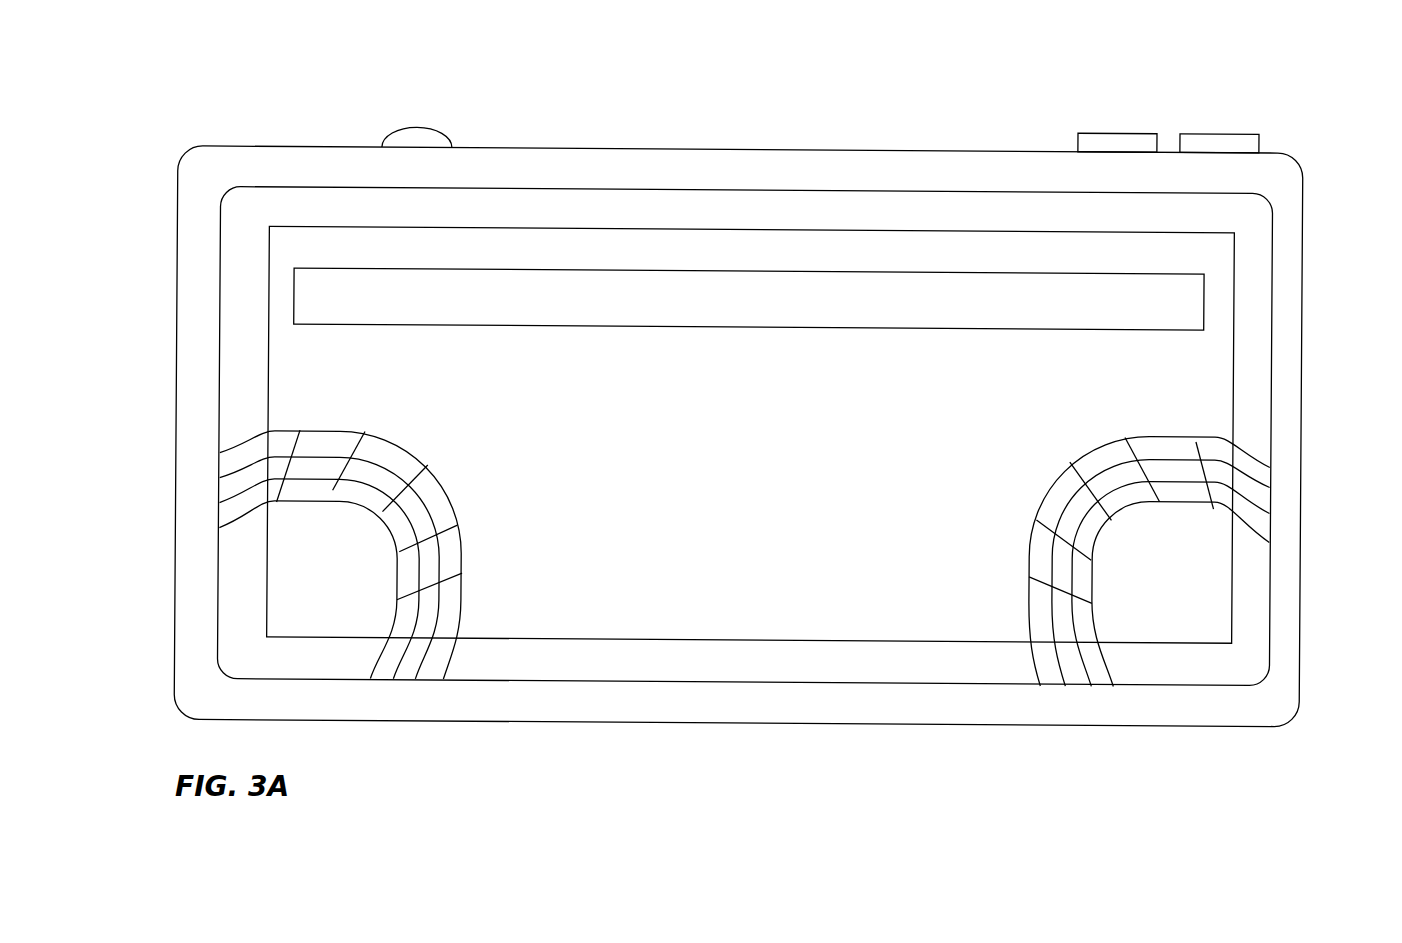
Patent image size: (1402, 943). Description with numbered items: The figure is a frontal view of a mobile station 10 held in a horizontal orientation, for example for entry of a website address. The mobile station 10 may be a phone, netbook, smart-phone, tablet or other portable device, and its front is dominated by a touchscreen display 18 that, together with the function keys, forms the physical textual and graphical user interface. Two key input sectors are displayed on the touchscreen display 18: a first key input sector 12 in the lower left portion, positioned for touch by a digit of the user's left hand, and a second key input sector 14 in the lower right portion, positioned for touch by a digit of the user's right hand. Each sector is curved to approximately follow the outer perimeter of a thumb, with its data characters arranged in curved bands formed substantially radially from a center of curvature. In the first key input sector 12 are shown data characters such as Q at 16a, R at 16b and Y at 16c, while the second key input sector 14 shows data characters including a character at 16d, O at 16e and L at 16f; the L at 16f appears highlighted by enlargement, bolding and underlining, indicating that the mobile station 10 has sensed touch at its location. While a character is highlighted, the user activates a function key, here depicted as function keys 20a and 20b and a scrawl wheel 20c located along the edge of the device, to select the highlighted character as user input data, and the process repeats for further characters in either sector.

The mobile station 10 is at (1302, 254).
The first key input sector 12 is at (283, 586).
The second key input sector 14 is at (1217, 546).
The data character Q 16a is at (313, 431).
The data character R 16b is at (447, 505).
The data character Y 16c is at (453, 597).
The data character 16d is at (1040, 621).
The data character O 16e is at (1048, 508).
The data character L 16f is at (1098, 478).
The touchscreen display 18 is at (268, 380).
The function key 20a is at (1232, 134).
The function key 20b is at (1118, 131).
The scrawl wheel 20c is at (418, 133).